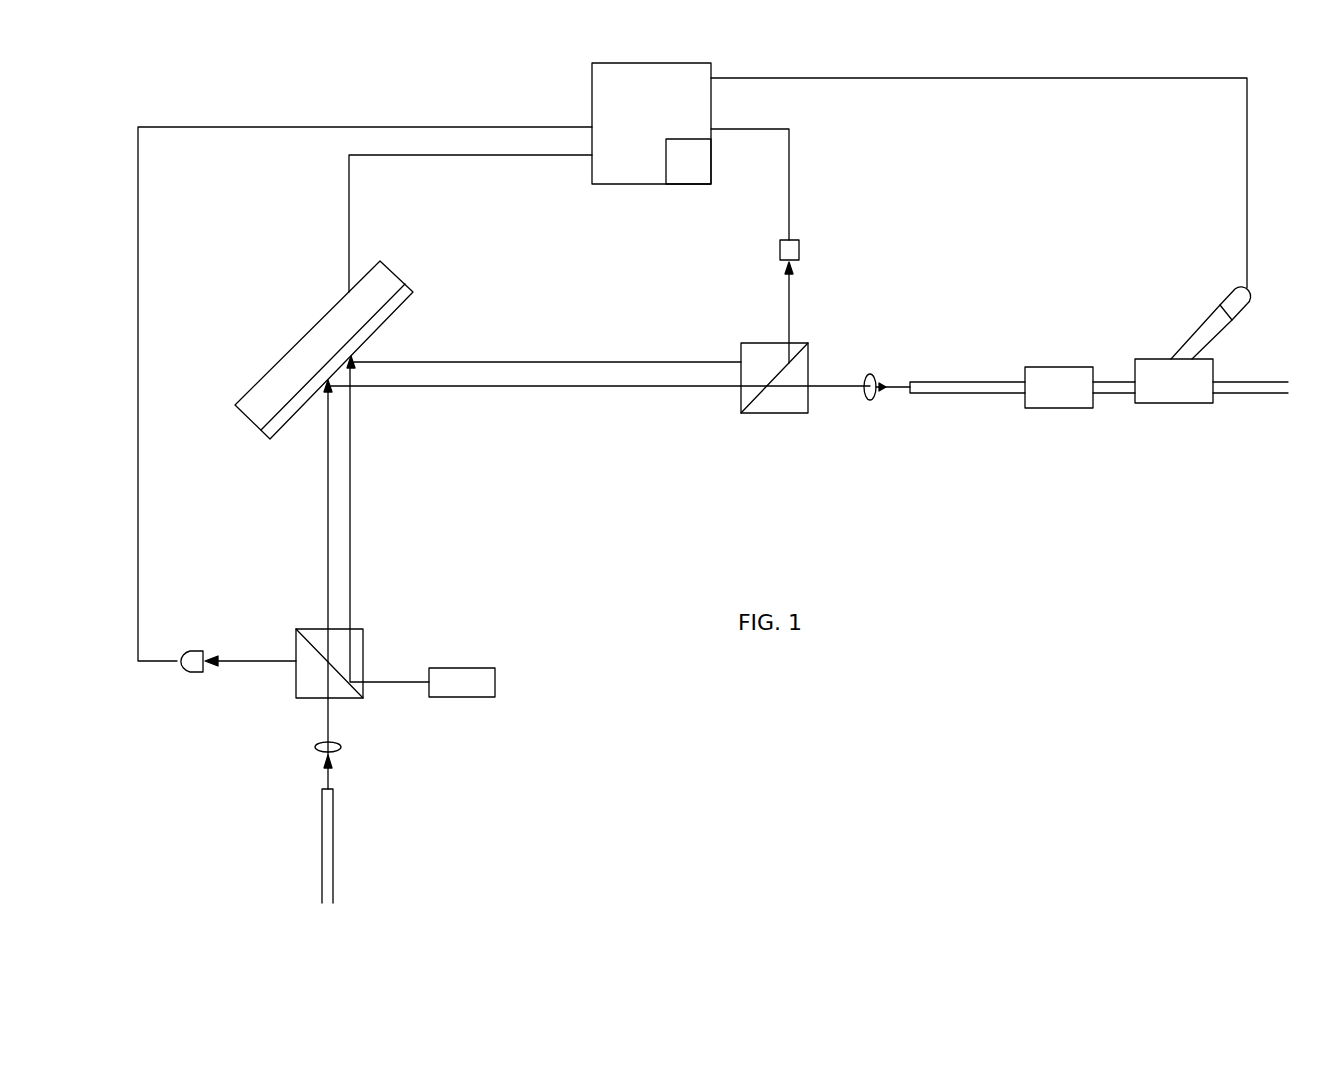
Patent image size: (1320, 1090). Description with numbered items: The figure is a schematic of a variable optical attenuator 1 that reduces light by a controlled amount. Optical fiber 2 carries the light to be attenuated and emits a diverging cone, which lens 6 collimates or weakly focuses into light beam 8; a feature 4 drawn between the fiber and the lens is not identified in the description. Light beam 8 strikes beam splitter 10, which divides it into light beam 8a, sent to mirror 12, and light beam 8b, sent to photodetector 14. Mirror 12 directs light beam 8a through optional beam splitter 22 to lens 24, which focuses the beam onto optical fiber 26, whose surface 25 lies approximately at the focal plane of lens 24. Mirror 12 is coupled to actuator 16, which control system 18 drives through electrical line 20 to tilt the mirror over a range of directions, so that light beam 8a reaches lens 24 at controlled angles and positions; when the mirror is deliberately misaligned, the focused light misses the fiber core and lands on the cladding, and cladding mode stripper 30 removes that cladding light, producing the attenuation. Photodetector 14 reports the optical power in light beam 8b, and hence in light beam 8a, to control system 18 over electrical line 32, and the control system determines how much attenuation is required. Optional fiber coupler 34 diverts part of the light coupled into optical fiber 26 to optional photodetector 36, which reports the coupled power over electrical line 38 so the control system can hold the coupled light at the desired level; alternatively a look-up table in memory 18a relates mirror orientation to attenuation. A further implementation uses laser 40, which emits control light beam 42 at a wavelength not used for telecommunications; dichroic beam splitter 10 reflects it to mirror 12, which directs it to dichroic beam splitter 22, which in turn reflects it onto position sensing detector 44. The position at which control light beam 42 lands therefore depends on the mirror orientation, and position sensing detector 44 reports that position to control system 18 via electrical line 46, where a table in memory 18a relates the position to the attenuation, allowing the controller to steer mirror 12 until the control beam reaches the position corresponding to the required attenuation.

The variable optical attenuator 1 is at (108, 93).
The optical fiber 2 is at (334, 820).
The laser beam 4 is at (334, 775).
The lens 6 is at (316, 750).
The light beam 8 is at (326, 712).
The light beam 8a is at (545, 388).
The light beam 8b is at (254, 662).
The beam splitter 10 is at (364, 642).
The mirror 12 is at (413, 290).
The photodetector 14 is at (192, 673).
The actuator 16 is at (384, 262).
The control system 18 is at (591, 77).
The memory 18a is at (665, 173).
The electrical line 20 is at (487, 157).
The beam splitter 22 is at (775, 414).
The lens 24 is at (873, 399).
The surface 25 is at (895, 386).
The optical fiber 26 is at (962, 395).
The cladding mode stripper 30 is at (1058, 409).
The electrical line 32 is at (140, 447).
The fiber coupler 34 is at (1168, 404).
The photodetector 36 is at (1250, 300).
The electrical line 38 is at (1249, 120).
The laser 40 is at (468, 698).
The control light beam 42 is at (634, 361).
The position sensing detector 44 is at (800, 250).
The electrical line 46 is at (790, 180).